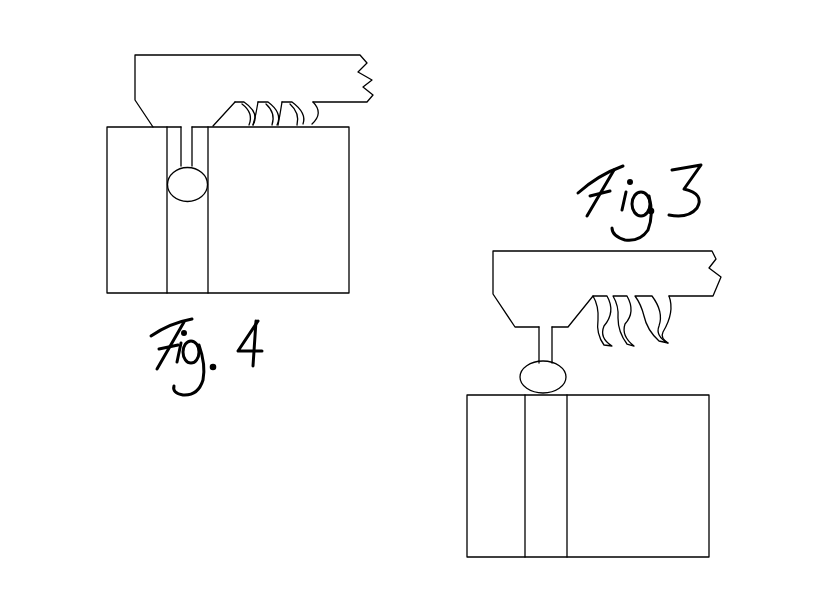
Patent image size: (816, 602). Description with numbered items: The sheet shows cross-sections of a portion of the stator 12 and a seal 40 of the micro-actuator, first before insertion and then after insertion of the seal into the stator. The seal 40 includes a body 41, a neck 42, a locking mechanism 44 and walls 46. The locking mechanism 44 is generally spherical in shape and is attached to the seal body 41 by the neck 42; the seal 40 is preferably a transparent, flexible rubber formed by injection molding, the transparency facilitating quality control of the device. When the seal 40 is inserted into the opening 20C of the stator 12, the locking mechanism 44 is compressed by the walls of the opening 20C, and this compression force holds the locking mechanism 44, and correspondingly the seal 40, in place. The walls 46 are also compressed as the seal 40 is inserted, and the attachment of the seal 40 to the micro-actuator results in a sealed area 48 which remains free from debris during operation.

In FIG. 4, the stator 12 is at (223, 210).
In FIG. 3, the stator 12 is at (592, 438).
In FIG. 4, the opening 20C is at (183, 255).
In FIG. 3, the opening 20C is at (540, 482).
In FIG. 4, the seal 40 is at (163, 53).
In FIG. 3, the seal 40 is at (528, 249).
In FIG. 4, the seal body 41 is at (290, 70).
In FIG. 3, the seal body 41 is at (683, 276).
In FIG. 4, the neck 42 is at (185, 145).
In FIG. 3, the neck 42 is at (543, 337).
In FIG. 4, the locking mechanism 44 is at (178, 187).
In FIG. 3, the locking mechanism 44 is at (530, 378).
In FIG. 4, the walls 46 is at (253, 126).
In FIG. 3, the walls 46 is at (611, 346).
In FIG. 4, the sealed area 48 is at (352, 113).